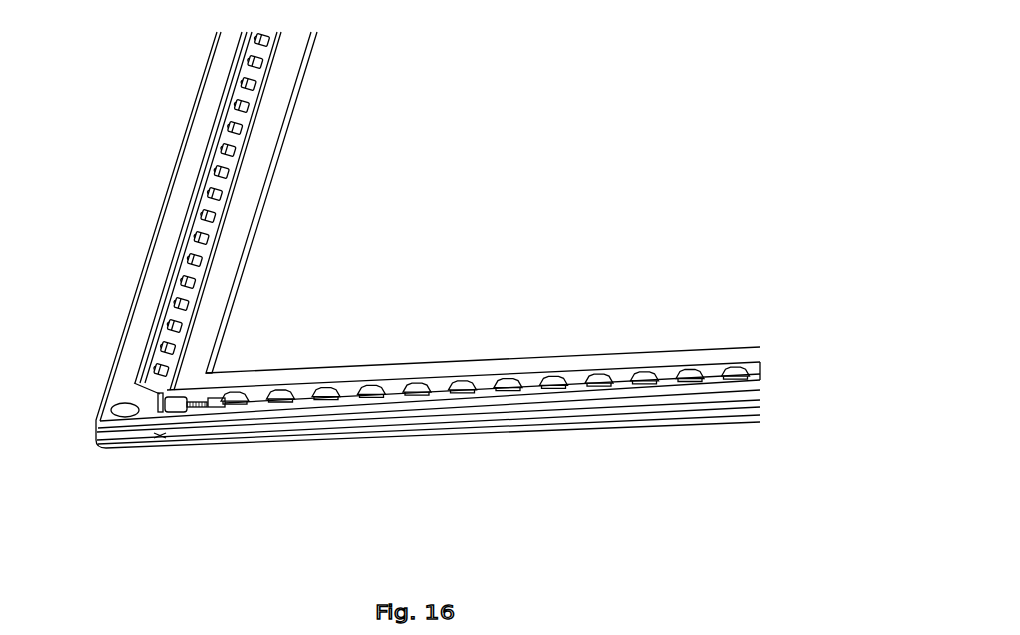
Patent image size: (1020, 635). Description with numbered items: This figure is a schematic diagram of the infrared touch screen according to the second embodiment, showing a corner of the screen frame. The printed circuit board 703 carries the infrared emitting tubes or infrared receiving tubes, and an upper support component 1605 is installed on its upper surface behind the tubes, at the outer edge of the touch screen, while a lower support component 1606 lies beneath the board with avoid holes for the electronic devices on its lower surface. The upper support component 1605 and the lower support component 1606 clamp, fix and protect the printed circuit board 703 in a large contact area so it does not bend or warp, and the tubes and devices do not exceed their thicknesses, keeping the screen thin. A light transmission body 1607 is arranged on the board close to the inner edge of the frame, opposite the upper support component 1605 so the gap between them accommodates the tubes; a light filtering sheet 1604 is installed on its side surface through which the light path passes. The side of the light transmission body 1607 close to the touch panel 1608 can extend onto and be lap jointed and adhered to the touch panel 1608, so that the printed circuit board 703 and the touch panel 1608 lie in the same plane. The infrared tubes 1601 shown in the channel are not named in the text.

The LED light source 1601 is at (200, 290).
The light filtering sheet 1604 is at (265, 192).
The upper support component 1605 is at (147, 307).
The lower support component 1606 is at (353, 440).
The light transmission body 1607 is at (281, 102).
The touch panel 1608 is at (482, 313).
The printed circuit board 703 is at (162, 385).